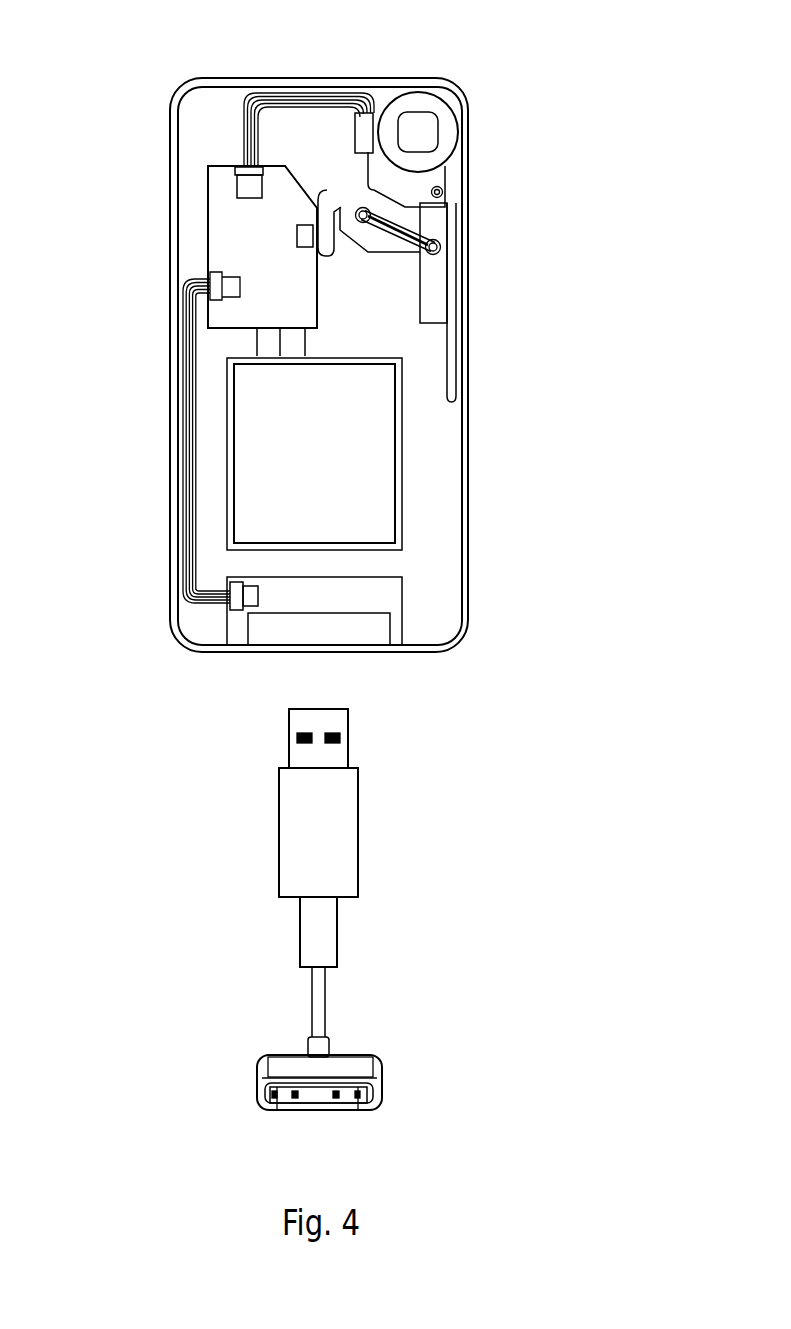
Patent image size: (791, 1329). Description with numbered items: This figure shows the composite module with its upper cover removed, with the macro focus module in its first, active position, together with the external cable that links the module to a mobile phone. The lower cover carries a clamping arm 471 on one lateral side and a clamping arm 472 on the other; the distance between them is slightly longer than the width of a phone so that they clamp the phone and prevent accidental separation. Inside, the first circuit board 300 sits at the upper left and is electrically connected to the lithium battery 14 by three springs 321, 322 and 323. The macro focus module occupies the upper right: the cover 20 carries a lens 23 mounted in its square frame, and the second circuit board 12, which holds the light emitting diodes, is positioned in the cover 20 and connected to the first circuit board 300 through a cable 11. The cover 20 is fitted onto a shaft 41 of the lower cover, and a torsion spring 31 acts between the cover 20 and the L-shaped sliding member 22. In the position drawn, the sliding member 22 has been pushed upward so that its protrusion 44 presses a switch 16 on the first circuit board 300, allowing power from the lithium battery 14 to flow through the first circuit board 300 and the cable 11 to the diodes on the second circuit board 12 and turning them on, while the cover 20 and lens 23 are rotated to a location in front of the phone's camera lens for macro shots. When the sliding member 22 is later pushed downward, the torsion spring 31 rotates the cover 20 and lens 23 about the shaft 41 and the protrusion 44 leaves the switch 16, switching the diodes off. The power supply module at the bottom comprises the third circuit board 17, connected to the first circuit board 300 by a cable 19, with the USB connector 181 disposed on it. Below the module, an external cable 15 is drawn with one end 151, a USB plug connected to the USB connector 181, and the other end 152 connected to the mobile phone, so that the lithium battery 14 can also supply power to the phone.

The cable 11 is at (242, 150).
The second circuit board 12 is at (365, 140).
The lithium battery 14 is at (366, 452).
The external cable 15 is at (315, 993).
The switch 16 is at (298, 233).
The third circuit board 17 is at (390, 607).
The cable 19 is at (197, 582).
The cover 20 is at (437, 177).
The sliding member 22 is at (438, 320).
The lens 23 is at (422, 125).
The torsion spring 31 is at (438, 225).
The shaft 41 is at (437, 192).
The protrusion 44 is at (327, 193).
The end 151 is at (343, 840).
The end 152 is at (353, 1068).
The USB connector 181 is at (297, 632).
The first circuit board 300 is at (237, 243).
The spring 321 is at (257, 345).
The spring 322 is at (280, 347).
The spring 323 is at (302, 352).
The clamping arm 471 is at (170, 513).
The clamping arm 472 is at (459, 503).